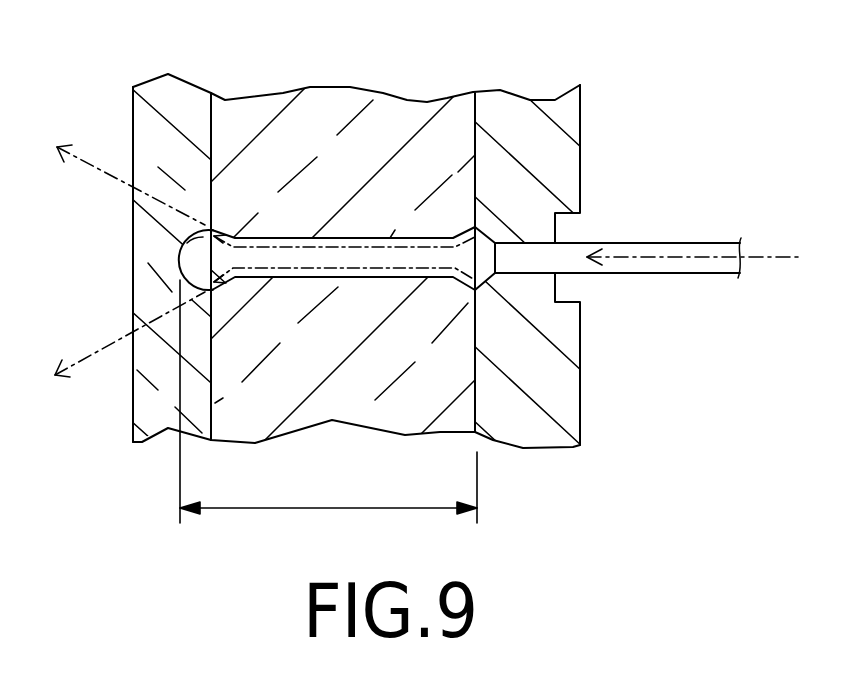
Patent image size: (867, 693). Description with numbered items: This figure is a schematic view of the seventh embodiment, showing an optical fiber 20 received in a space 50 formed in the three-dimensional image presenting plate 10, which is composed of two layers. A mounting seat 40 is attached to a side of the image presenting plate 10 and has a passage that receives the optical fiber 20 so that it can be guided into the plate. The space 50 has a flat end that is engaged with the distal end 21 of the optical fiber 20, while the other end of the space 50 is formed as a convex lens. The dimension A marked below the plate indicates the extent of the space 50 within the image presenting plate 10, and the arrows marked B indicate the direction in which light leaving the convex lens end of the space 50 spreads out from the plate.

The 3D image presenting plate 10 is at (255, 82).
The optical fiber 20 is at (645, 248).
The distal end of the optical fiber 21 is at (560, 273).
The mounting seat 40 is at (572, 158).
The space 50 is at (363, 250).
The channel length dimension A is at (328, 401).
The wire exit direction B is at (107, 175).